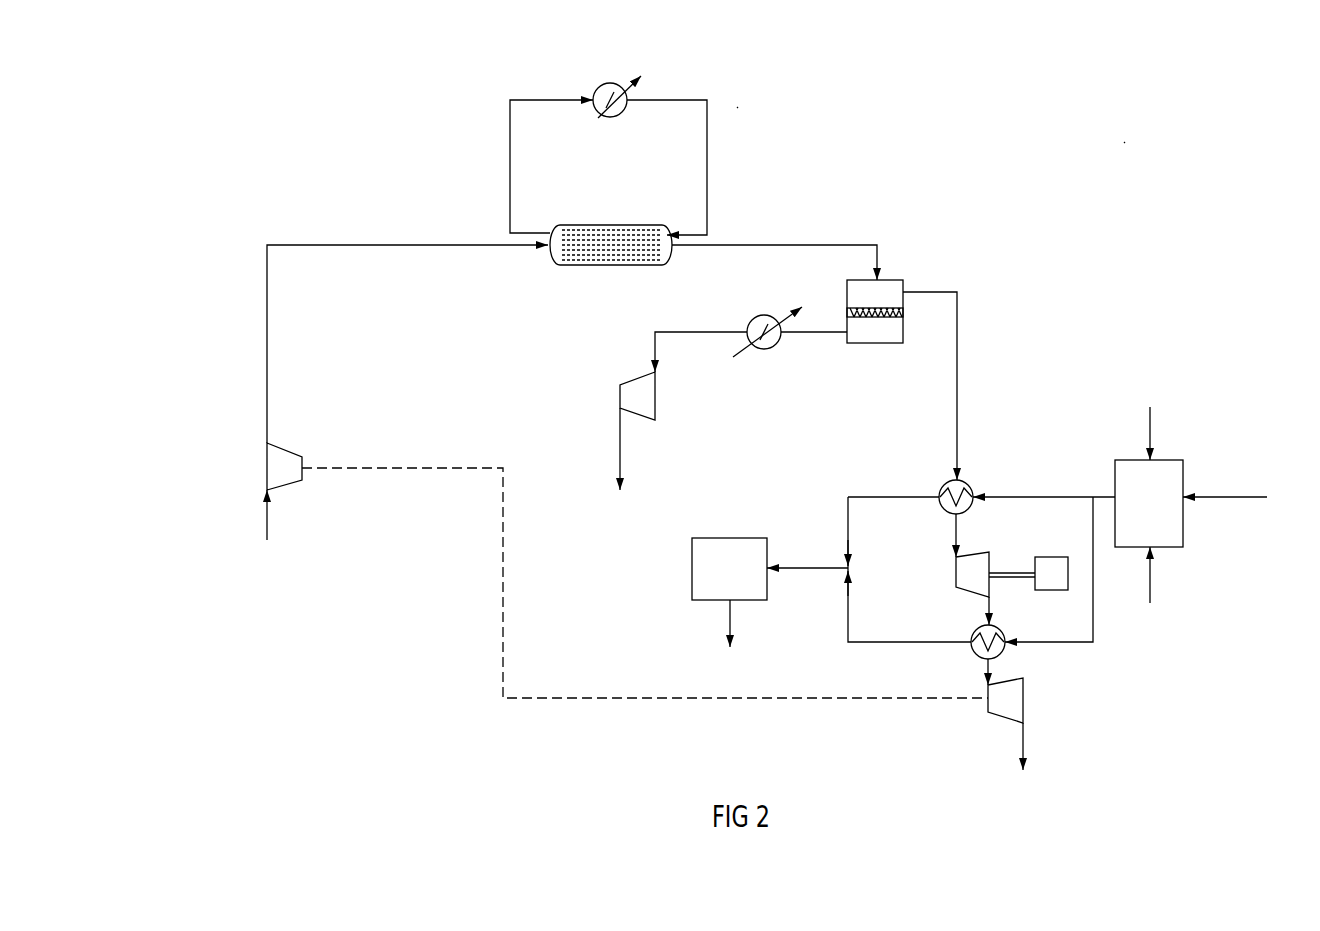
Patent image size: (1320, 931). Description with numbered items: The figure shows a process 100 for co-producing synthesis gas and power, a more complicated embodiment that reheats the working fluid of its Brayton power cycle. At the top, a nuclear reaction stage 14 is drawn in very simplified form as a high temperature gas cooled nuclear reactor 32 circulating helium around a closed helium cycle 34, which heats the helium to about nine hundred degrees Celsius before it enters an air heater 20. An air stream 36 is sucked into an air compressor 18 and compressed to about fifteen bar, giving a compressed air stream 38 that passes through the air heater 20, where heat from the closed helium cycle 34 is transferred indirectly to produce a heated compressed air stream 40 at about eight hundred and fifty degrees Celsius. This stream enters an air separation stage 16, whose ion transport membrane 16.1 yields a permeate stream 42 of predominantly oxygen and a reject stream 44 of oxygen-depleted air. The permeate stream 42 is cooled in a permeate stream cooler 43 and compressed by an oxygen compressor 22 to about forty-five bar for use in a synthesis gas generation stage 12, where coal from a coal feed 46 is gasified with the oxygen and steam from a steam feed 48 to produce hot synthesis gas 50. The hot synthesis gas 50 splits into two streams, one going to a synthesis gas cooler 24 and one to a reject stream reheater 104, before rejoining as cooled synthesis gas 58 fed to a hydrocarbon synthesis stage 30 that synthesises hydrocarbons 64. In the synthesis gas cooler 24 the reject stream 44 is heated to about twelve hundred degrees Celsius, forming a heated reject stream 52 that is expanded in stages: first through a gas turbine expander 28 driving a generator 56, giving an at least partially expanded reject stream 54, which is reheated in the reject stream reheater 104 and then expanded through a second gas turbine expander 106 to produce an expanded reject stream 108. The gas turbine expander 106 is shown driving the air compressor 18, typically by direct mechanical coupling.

The process 100 is at (1132, 135).
The nuclear reaction stage 14 is at (744, 103).
The high temperature gas cooled nuclear reactor 32 is at (597, 88).
The closed helium cycle 34 is at (510, 158).
The air heater 20 is at (578, 267).
The compressed air stream 38 is at (267, 316).
The heated compressed air stream 40 is at (803, 245).
The air compressor 18 is at (285, 460).
The air stream 36 is at (267, 523).
The air separation stage 16 is at (910, 272).
The ion transport membrane 16.1 is at (890, 317).
The permeate stream 42 is at (716, 332).
The permeate stream cooler 43 is at (783, 342).
The oxygen compressor 22 is at (646, 398).
The reject stream 44 is at (957, 395).
The synthesis gas cooler 24 is at (962, 482).
The cooled synthesis gas 58 is at (900, 497).
The hot synthesis gas 50 is at (1066, 497).
The heated reject stream 52 is at (963, 521).
The gas turbine expander 28 is at (966, 572).
The generator 56 is at (1053, 575).
The at least partially expanded reject stream 54 is at (984, 608).
The reject stream reheater 104 is at (1000, 648).
The gas turbine expander 106 is at (1005, 708).
The expanded reject stream 108 is at (1025, 737).
The hydrocarbon synthesis stage 30 is at (742, 578).
The hydrocarbons 64 is at (730, 614).
The synthesis gas generation stage 12 is at (1161, 509).
The coal feed 46 is at (1150, 428).
The steam feed 48 is at (1225, 497).